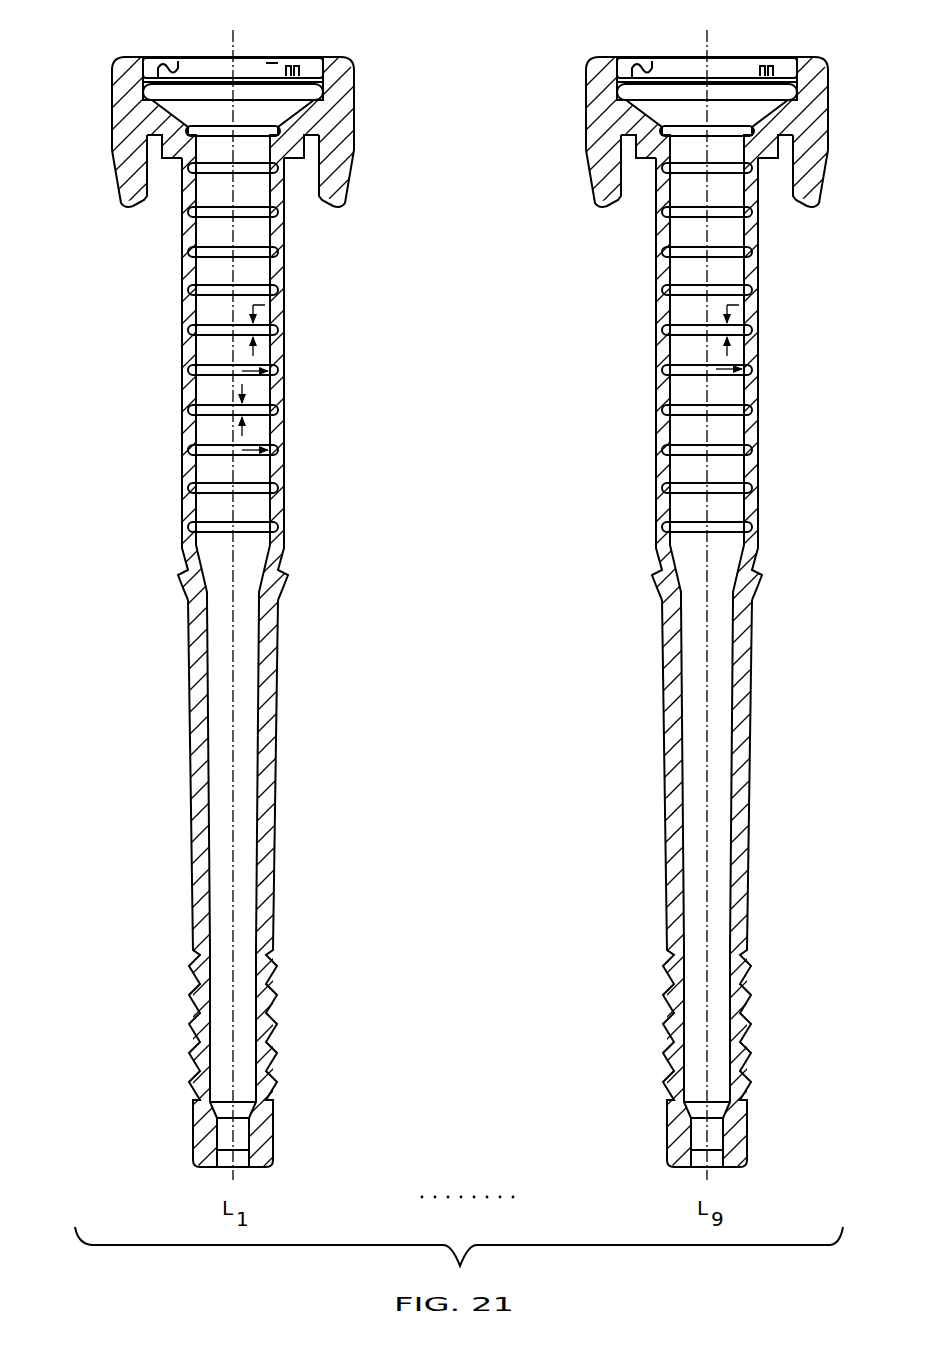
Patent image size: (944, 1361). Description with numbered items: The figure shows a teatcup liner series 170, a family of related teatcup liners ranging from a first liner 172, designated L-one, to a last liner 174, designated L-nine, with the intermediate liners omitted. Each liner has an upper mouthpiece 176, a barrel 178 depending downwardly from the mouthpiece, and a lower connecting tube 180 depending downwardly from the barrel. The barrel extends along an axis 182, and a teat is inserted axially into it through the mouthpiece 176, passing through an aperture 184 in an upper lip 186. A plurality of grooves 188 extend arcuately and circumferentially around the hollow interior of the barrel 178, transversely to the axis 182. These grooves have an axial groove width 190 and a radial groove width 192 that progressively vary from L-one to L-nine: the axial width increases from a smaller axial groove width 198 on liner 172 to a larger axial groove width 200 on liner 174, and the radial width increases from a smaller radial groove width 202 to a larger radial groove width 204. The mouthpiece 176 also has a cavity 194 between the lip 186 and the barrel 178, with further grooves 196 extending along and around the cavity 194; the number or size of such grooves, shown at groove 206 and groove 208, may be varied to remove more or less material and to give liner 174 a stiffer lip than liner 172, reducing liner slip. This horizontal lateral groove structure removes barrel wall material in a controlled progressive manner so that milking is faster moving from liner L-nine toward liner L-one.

The teatcup liner series 170 is at (255, 605).
The teatcup liner 172 is at (347, 64).
The teatcup liner 174 is at (684, 604).
The upper mouthpiece 176 is at (118, 152).
The barrel 178 is at (184, 250).
The lower connecting tube 180 is at (186, 735).
The axis 182 is at (232, 40).
The aperture 184 is at (271, 62).
The upper lip 186 is at (167, 56).
The grooves 188 is at (280, 253).
The axial groove width 190 is at (285, 302).
The radial groove width 192 is at (284, 372).
The cavity 194 is at (172, 104).
The grooves 196 is at (303, 102).
The axial groove width 198 is at (242, 384).
The axial groove width 200 is at (735, 305).
The radial groove width 202 is at (282, 450).
The radial groove width 204 is at (760, 369).
The groove 206 is at (300, 62).
The groove 208 is at (768, 72).